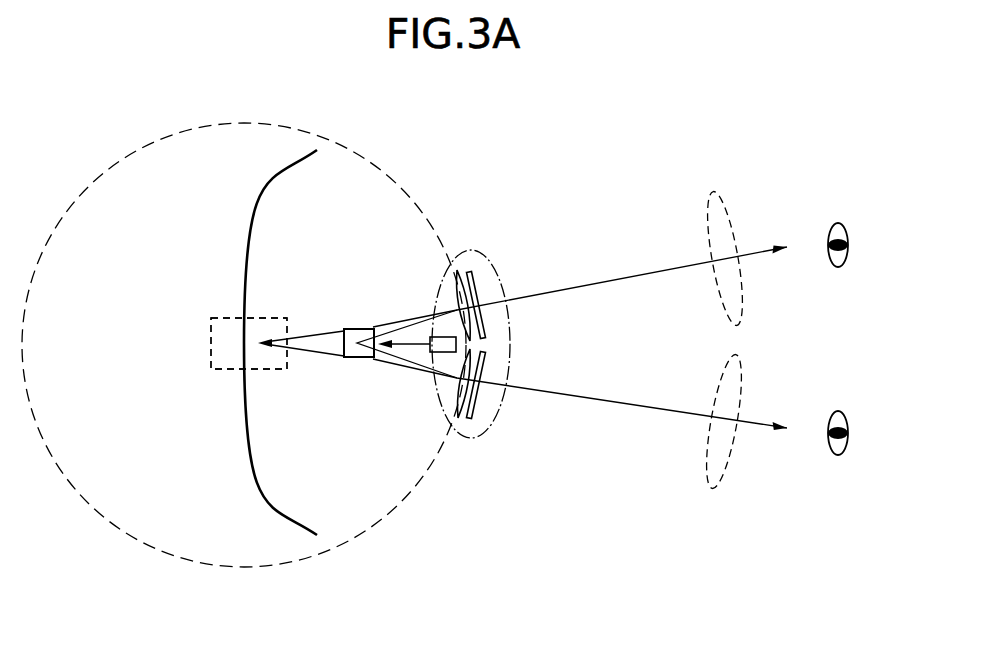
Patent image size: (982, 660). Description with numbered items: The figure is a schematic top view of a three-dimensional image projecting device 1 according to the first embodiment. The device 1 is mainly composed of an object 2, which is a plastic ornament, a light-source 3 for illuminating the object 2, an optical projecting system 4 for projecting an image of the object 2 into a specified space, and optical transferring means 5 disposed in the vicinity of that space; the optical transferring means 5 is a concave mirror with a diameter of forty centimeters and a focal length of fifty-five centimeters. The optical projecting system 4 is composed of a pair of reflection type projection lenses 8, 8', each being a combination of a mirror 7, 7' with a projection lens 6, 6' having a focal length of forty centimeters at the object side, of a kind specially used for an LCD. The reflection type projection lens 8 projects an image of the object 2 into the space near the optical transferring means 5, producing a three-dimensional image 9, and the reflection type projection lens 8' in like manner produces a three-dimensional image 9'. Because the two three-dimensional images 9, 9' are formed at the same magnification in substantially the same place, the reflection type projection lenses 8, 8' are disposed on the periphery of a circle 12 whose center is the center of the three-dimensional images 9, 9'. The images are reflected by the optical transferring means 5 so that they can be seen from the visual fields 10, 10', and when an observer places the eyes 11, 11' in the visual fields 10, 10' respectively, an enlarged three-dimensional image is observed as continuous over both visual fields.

The three-dimensional image projecting device 1 is at (614, 142).
The object 2 is at (352, 329).
The light-source 3 is at (435, 350).
The optical projecting system 4 is at (510, 345).
The optical transferring means 5 is at (281, 177).
The projection lens 6 is at (461, 279).
The projection lens 6' is at (462, 413).
The mirror 7 is at (481, 278).
The mirror 7' is at (486, 415).
The reflection type projection lens 8 is at (476, 265).
The reflection type projection lens 8' is at (478, 430).
The three-dimensional image 9 is at (268, 361).
The three-dimensional image 9' is at (249, 343).
The visual field 10 is at (723, 439).
The visual field 10' is at (725, 244).
The eye 11 is at (840, 450).
The eye 11' is at (840, 227).
The circle 12 is at (108, 166).